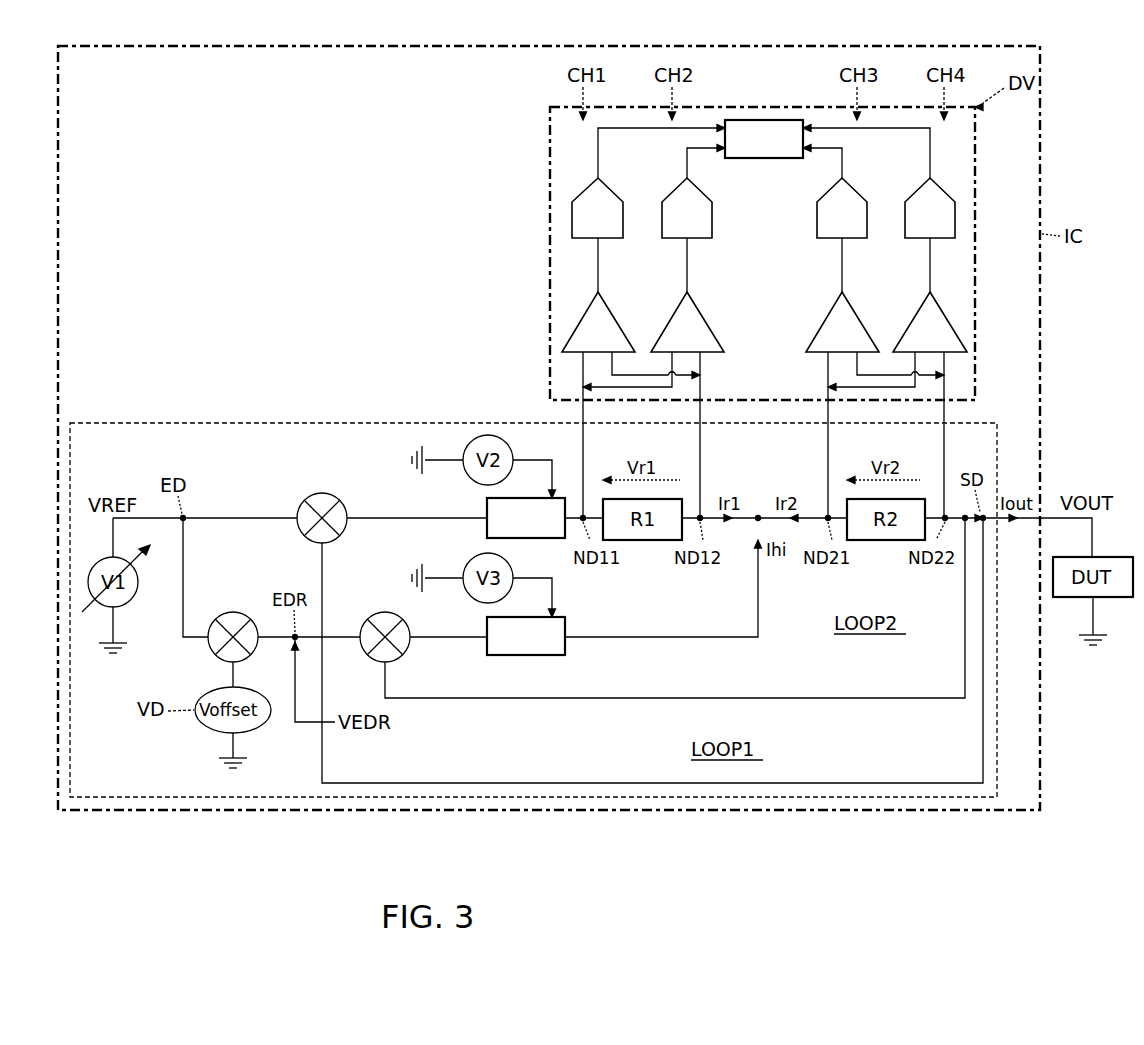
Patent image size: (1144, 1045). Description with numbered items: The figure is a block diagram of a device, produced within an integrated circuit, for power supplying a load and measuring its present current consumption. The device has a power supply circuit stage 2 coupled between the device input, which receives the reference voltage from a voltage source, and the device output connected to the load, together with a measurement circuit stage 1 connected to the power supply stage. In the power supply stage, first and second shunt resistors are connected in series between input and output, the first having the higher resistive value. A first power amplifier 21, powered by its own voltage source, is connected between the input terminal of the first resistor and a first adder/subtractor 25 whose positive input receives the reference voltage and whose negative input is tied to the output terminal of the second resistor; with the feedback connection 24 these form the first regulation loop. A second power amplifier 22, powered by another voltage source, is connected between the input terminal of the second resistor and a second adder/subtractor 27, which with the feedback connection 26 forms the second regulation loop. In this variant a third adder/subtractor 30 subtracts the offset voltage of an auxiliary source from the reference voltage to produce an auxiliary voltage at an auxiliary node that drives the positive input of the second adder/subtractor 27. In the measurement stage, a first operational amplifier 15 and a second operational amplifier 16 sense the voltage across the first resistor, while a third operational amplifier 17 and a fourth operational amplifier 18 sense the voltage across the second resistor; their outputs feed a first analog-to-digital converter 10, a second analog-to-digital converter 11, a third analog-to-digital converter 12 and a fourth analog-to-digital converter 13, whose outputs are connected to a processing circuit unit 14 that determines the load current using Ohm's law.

The measurement circuit stage 1 is at (540, 158).
The power supply circuit stage 2 is at (150, 413).
The first analog-to-digital converter 10 is at (620, 186).
The second analog-to-digital converter 11 is at (709, 186).
The third analog-to-digital converter 12 is at (820, 186).
The fourth analog-to-digital converter 13 is at (908, 186).
The processing circuit unit 14 is at (764, 139).
The first operational amplifier 15 is at (617, 323).
The second operational amplifier 16 is at (706, 323).
The third operational amplifier 17 is at (823, 323).
The fourth operational amplifier 18 is at (911, 323).
The first power amplifier 21 is at (526, 518).
The second power amplifier 22 is at (526, 636).
The feedback connection 24 is at (849, 781).
The first adder/subtractor 25 is at (322, 492).
The feedback connection 26 is at (849, 696).
The second adder/subtractor 27 is at (385, 610).
The third adder/subtractor 30 is at (233, 610).